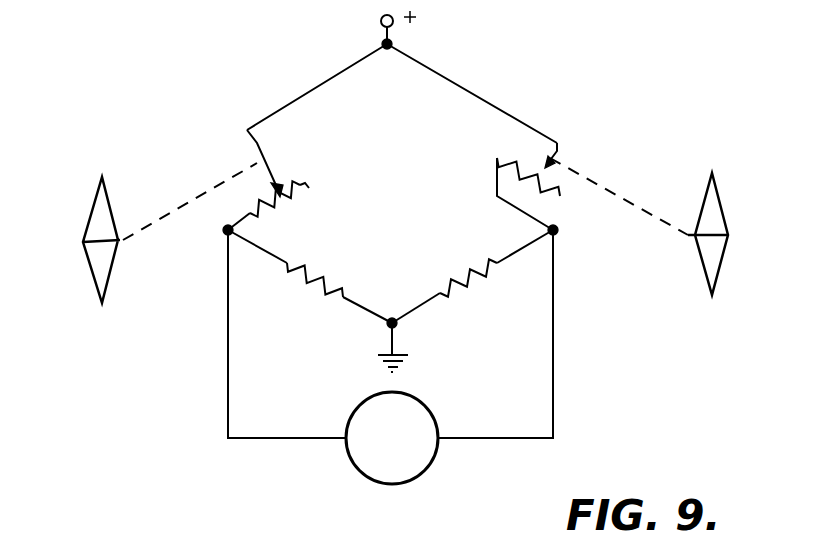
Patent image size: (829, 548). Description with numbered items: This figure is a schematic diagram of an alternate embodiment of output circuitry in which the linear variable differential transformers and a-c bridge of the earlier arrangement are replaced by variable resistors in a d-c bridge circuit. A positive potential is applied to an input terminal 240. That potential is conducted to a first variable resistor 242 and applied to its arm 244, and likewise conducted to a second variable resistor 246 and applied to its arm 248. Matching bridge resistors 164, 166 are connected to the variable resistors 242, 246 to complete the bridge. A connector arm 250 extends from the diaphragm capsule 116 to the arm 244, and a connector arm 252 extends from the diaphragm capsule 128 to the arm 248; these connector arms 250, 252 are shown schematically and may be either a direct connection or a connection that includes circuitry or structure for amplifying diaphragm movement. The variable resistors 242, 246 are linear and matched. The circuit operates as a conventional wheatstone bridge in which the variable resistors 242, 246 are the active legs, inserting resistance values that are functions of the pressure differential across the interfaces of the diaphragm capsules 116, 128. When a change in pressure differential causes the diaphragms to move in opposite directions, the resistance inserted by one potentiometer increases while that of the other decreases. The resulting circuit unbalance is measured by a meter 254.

The input terminal 240 is at (380, 20).
The arm 244 is at (258, 145).
The first variable resistor 242 is at (302, 192).
The second variable resistor 246 is at (520, 158).
The arm 248 is at (558, 150).
The connector arm 250 is at (183, 205).
The connector arm 252 is at (613, 190).
The diaphragm capsule 116 is at (93, 197).
The diaphragm capsule 128 is at (722, 190).
The bridge resistor 166 is at (311, 283).
The bridge resistor 164 is at (466, 282).
The meter 254 is at (357, 471).